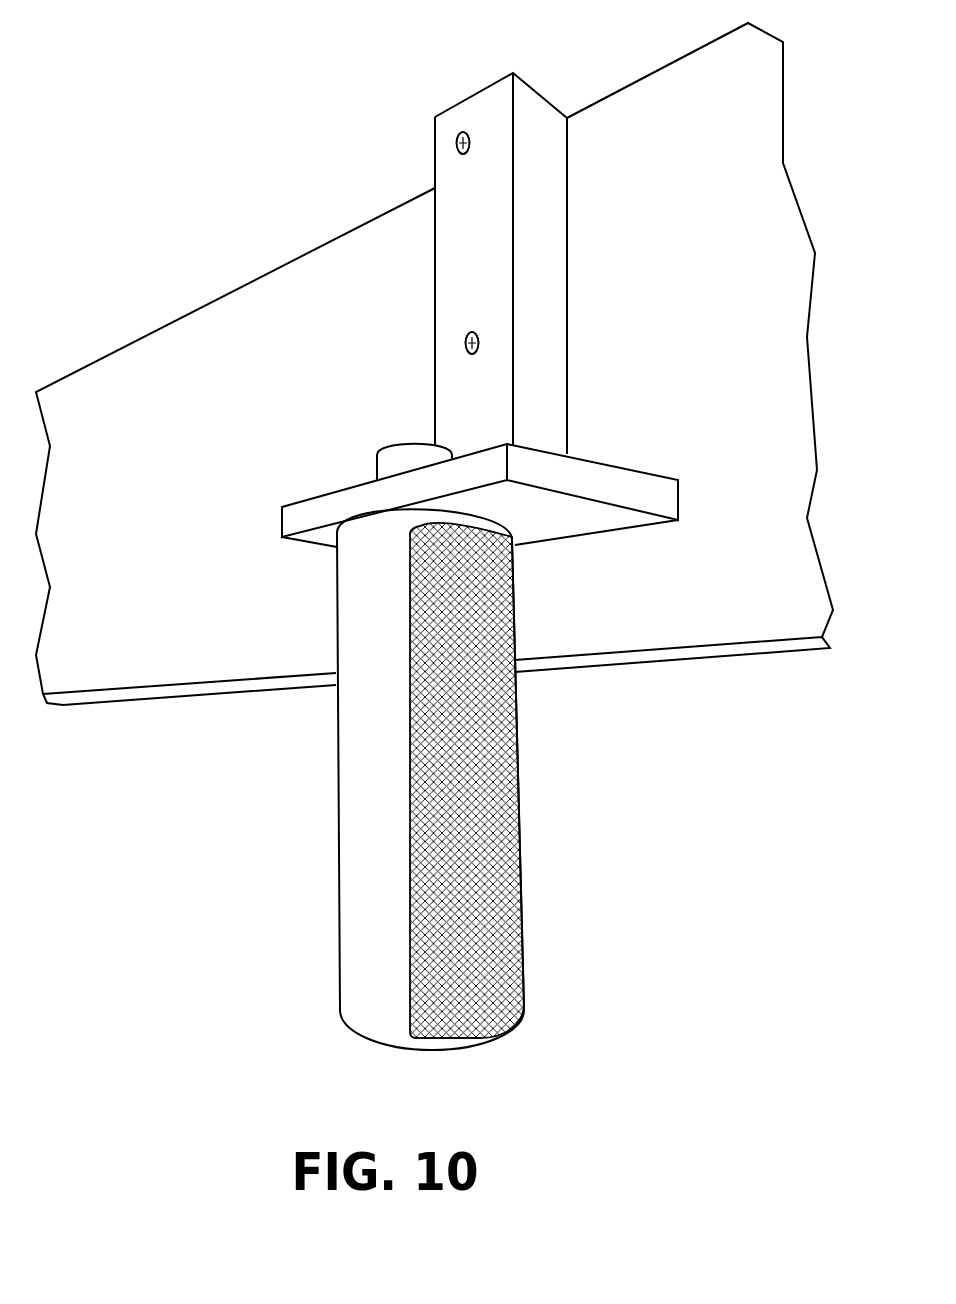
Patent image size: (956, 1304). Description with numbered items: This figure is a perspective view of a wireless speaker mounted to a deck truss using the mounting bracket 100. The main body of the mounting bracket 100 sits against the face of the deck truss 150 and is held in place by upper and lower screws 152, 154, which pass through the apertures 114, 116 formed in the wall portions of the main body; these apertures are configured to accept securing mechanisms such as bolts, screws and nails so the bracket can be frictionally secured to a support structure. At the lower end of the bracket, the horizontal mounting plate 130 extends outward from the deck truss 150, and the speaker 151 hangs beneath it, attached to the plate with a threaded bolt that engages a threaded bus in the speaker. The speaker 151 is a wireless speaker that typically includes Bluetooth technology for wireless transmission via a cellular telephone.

The mounting bracket 100 is at (386, 411).
The aperture 114 is at (471, 150).
The aperture 116 is at (480, 345).
The horizontal mounting plate 130 is at (565, 518).
The deck truss 150 is at (182, 646).
The speaker 151 is at (487, 858).
The upper screw 152 is at (466, 340).
The lower screw 154 is at (457, 141).